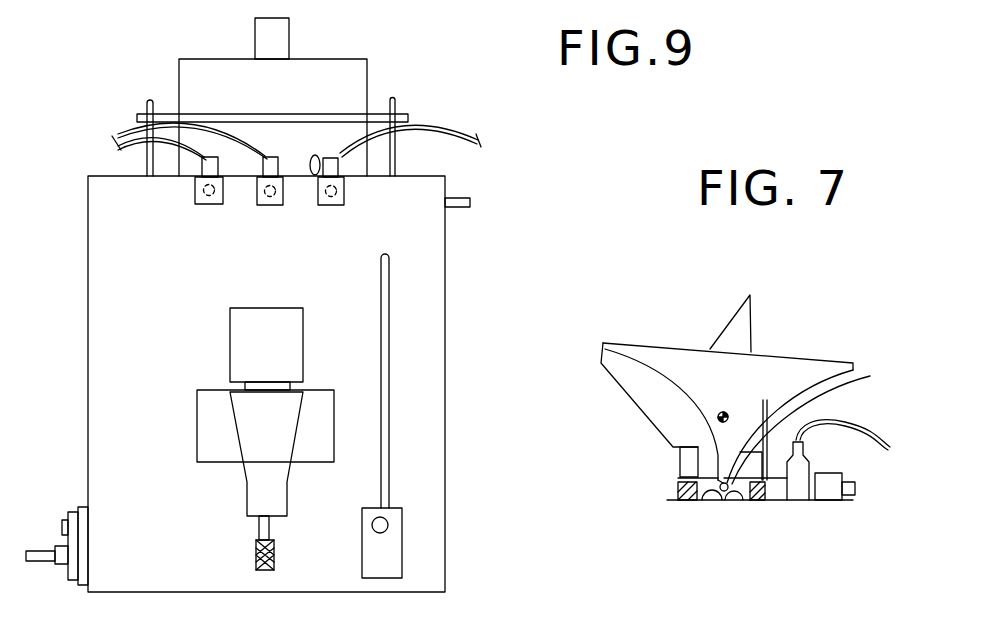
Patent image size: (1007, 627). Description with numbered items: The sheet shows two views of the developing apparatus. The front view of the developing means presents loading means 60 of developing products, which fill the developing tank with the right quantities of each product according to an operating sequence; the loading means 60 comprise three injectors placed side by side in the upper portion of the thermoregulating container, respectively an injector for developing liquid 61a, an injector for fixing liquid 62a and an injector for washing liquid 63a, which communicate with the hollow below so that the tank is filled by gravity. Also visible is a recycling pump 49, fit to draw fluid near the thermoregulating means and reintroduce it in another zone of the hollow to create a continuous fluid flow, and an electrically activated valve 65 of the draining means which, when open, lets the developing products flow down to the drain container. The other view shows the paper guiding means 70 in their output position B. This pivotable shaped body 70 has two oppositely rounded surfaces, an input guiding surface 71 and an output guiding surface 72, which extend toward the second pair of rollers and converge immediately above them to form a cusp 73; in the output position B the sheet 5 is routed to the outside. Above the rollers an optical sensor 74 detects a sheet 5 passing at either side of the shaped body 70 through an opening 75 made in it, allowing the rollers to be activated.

In FIG. 9, the loading means 60 is at (256, 226).
In FIG. 9, the injector for washing liquid 63a is at (192, 203).
In FIG. 9, the injector for fixing liquid 62a is at (283, 174).
In FIG. 9, the injector for developing liquid 61a is at (343, 198).
In FIG. 9, the optical sensor 74 is at (313, 160).
In FIG. 9, the opening 75 is at (323, 153).
In FIG. 9, the electrically activated valve 65 is at (273, 418).
In FIG. 9, the recycling pump 49 is at (393, 520).
In FIG. 7, the paper guiding means 70 is at (680, 333).
In FIG. 7, the input guiding surface 71 is at (667, 371).
In FIG. 7, the output position B is at (768, 332).
In FIG. 7, the output guiding surface 72 is at (808, 368).
In FIG. 7, the sheet 5 is at (803, 388).
In FIG. 7, the cusp 73 is at (720, 457).